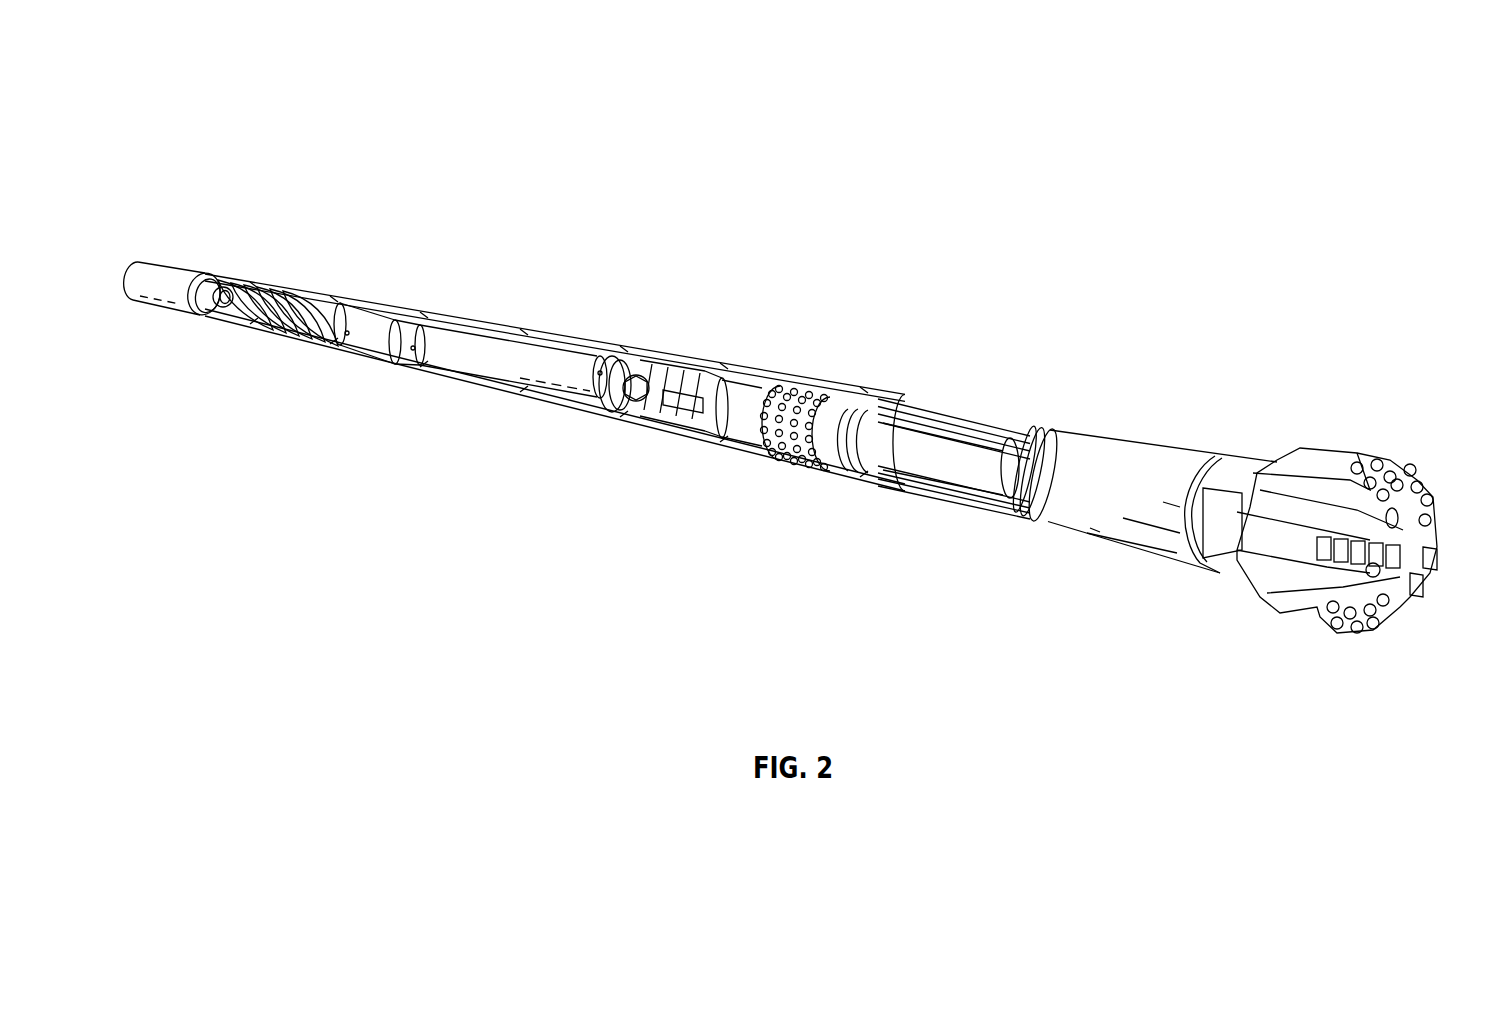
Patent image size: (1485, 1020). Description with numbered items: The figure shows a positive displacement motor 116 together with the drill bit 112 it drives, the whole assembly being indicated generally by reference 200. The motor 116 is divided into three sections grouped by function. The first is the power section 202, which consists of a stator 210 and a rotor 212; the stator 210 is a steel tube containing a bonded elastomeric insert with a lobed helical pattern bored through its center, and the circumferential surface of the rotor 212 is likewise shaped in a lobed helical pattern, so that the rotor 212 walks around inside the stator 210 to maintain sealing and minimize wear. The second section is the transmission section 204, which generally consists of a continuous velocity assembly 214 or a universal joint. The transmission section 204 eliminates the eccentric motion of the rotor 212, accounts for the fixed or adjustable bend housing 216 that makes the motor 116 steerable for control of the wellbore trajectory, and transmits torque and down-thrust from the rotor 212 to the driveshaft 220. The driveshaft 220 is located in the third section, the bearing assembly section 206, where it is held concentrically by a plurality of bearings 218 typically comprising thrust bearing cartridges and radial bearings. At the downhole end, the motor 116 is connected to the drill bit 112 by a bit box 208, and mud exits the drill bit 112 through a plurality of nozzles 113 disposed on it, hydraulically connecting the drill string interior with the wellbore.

The bottom hole assembly 200 is at (1378, 134).
The positive displacement motor 116 is at (1173, 653).
The power section 202 is at (362, 398).
The transmission section 204 is at (673, 468).
The bearing assembly section 206 is at (978, 543).
The bit box 208 is at (1187, 448).
The stator 210 is at (292, 288).
The rotor 212 is at (338, 307).
The continuous velocity (CV) assembly 214 is at (547, 365).
The adjustable bend housing 216 is at (657, 352).
The bearings 218 is at (808, 375).
The driveshaft 220 is at (955, 443).
The drill bit 112 is at (1344, 512).
The nozzles 113 is at (1417, 470).